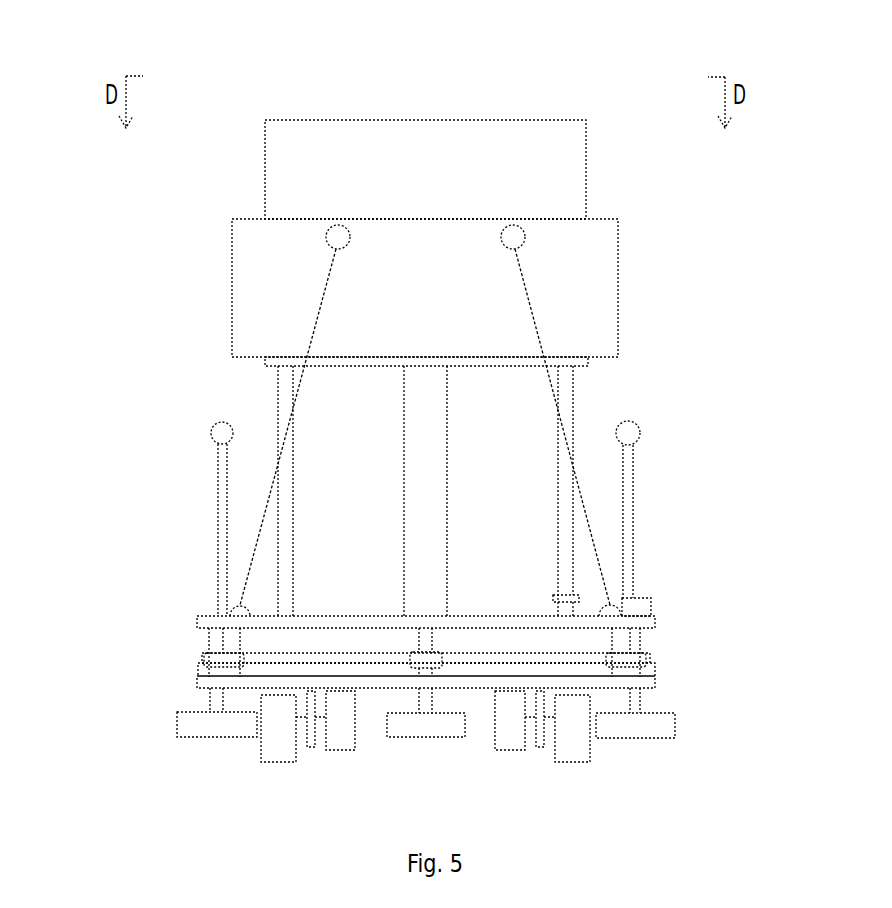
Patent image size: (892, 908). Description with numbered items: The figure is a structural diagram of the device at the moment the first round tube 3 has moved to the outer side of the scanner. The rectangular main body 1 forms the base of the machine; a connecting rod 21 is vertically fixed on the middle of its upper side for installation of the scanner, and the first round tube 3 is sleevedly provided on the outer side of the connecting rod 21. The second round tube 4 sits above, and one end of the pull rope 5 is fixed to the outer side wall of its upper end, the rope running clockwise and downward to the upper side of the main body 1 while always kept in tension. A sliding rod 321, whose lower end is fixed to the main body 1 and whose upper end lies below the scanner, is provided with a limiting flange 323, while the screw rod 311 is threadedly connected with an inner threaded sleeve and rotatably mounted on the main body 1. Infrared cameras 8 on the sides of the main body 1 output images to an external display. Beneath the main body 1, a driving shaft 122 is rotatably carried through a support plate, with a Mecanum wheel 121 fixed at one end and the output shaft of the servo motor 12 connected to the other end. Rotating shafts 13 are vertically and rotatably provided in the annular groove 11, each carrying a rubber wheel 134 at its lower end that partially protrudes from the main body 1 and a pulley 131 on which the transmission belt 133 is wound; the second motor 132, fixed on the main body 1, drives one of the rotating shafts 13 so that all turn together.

The main body 1 is at (203, 621).
The first round tube 3 is at (463, 157).
The second round tube 4 is at (257, 275).
The pull rope 5 is at (258, 533).
The infrared camera 8 is at (210, 432).
The annular groove 11 is at (205, 638).
The servo motor 12 is at (335, 735).
The rotating shaft 13 is at (200, 680).
The connecting rod 21 is at (430, 458).
The Mecanum wheel 121 is at (275, 749).
The driving shaft 122 is at (550, 735).
The pulley 131 is at (648, 653).
The second motor 132 is at (648, 607).
The transmission belt 133 is at (487, 658).
The rubber wheel 134 is at (415, 733).
The screw rod 311 is at (285, 573).
The sliding rod 321 is at (567, 525).
The limiting flange 323 is at (553, 597).